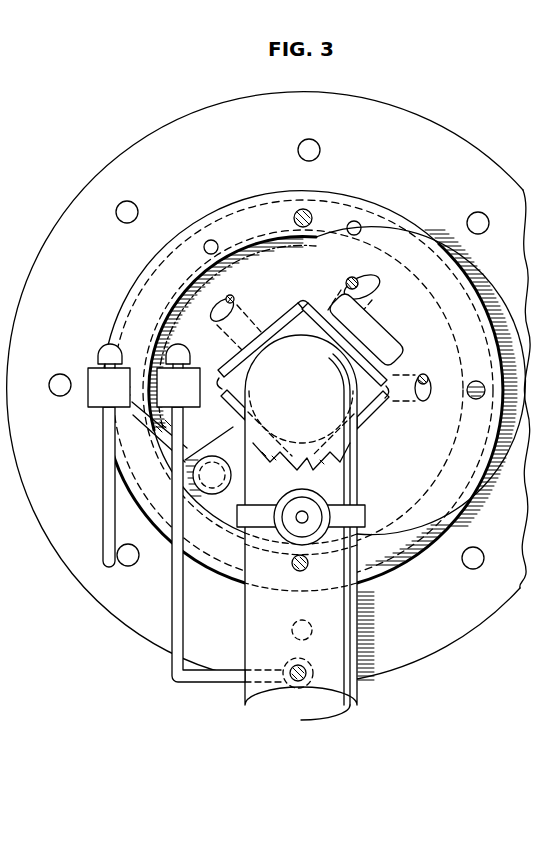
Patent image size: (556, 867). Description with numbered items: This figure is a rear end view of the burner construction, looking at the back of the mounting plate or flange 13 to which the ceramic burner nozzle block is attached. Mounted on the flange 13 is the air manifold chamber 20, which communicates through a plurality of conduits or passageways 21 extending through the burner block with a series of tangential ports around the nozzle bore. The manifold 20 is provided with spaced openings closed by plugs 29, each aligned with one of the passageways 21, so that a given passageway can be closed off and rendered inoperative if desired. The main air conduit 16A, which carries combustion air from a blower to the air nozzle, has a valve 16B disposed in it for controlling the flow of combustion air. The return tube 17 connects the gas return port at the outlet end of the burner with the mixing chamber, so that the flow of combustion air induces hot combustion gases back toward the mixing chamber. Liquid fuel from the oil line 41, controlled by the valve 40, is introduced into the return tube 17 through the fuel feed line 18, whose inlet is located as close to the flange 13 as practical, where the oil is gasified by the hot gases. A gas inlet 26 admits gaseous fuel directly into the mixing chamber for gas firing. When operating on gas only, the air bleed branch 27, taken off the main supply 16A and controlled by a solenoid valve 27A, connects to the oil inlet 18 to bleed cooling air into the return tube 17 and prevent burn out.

The mounting plate or flange 13 is at (180, 138).
The air manifold chamber 20 is at (398, 236).
The plugs 29 is at (310, 212).
The conduits or passageways 21 is at (348, 284).
The gas inlet 26 is at (362, 335).
The air conduit 16A is at (330, 703).
The valve 16B is at (360, 492).
The return tube 17 is at (217, 489).
The fuel feed line 18 is at (132, 418).
The solenoid valve 27A is at (177, 343).
The air bleed branch 27 is at (227, 677).
The valve 40 is at (92, 376).
The oil line 41 is at (102, 522).